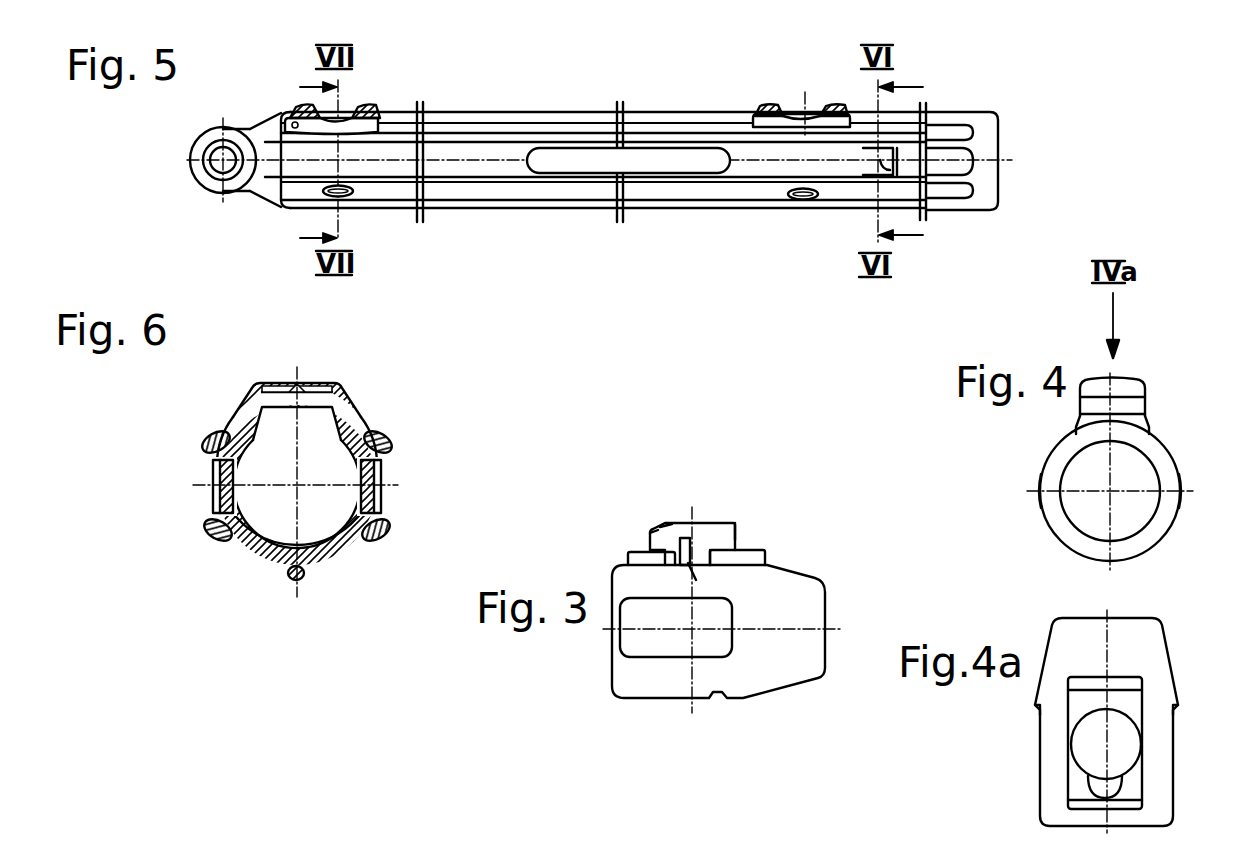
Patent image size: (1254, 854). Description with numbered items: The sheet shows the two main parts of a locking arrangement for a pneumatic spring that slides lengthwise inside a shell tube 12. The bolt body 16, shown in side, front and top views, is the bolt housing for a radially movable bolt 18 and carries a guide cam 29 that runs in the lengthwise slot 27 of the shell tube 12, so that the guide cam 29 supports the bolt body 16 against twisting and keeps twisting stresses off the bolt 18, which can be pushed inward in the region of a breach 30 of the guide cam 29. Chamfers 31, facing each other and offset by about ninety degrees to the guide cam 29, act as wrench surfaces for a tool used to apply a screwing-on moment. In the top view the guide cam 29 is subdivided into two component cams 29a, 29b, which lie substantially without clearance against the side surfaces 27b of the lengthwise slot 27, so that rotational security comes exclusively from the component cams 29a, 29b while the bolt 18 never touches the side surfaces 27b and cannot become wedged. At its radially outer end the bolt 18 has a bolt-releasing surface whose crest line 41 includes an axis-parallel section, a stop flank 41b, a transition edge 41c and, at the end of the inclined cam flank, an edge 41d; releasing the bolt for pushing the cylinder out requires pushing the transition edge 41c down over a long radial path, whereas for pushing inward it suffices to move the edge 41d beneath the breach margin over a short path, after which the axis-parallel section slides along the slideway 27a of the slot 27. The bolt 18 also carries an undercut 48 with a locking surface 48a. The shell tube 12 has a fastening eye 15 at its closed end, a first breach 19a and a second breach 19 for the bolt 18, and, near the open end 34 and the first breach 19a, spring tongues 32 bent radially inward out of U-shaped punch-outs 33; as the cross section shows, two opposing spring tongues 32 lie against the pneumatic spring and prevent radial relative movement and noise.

In FIG. 5, the shell tube 12 is at (504, 190).
In FIG. 6, the shell tube 12 is at (352, 415).
In FIG. 5, the fastening eye 15 is at (205, 182).
In FIG. 3, the bolt body 16 is at (640, 673).
In FIG. 4, the bolt body 16 is at (1067, 533).
In FIG. 4A, the bolt body 16 is at (1045, 800).
In FIG. 3, the bolt 18 is at (717, 542).
In FIG. 4, the bolt 18 is at (1127, 385).
In FIG. 4A, the bolt 18 is at (1087, 742).
In FIG. 5, the second breach 19 is at (360, 112).
In FIG. 5, the first breach 19a is at (790, 110).
In FIG. 5, the lengthwise slot 27 is at (290, 117).
In FIG. 6, the lengthwise slot 27 is at (238, 416).
In FIG. 6, the slideway 27a is at (320, 387).
In FIG. 6, the side surfaces 27b is at (270, 412).
In FIG. 3, the guide cam 29 is at (635, 560).
In FIG. 4, the guide cam 29 is at (1130, 420).
In FIG. 4A, the guide cam 29 is at (1137, 666).
In FIG. 4A, the component cam 29a is at (1137, 695).
In FIG. 4A, the component cam 29b is at (1130, 800).
In FIG. 3, the breach 30 is at (735, 561).
In FIG. 4A, the breach 30 is at (1143, 747).
In FIG. 3, the chamfers 31 is at (645, 640).
In FIG. 4, the chamfers 31 is at (1038, 487).
In FIG. 4A, the chamfers 31 is at (1038, 765).
In FIG. 5, the spring tongues 32 is at (890, 170).
In FIG. 6, the spring tongues 32 is at (213, 500).
In FIG. 5, the U-shaped punch-outs 33 is at (963, 172).
In FIG. 6, the U-shaped punch-outs 33 is at (387, 462).
In FIG. 5, the open end 34 is at (1003, 125).
In FIG. 3, the crest line 41 is at (704, 520).
In FIG. 3, the stop flank 41b is at (664, 523).
In FIG. 3, the transition edge 41c is at (739, 524).
In FIG. 3, the edge 41d is at (653, 530).
In FIG. 3, the undercut 48 is at (665, 547).
In FIG. 3, the locking surface 48a is at (696, 580).